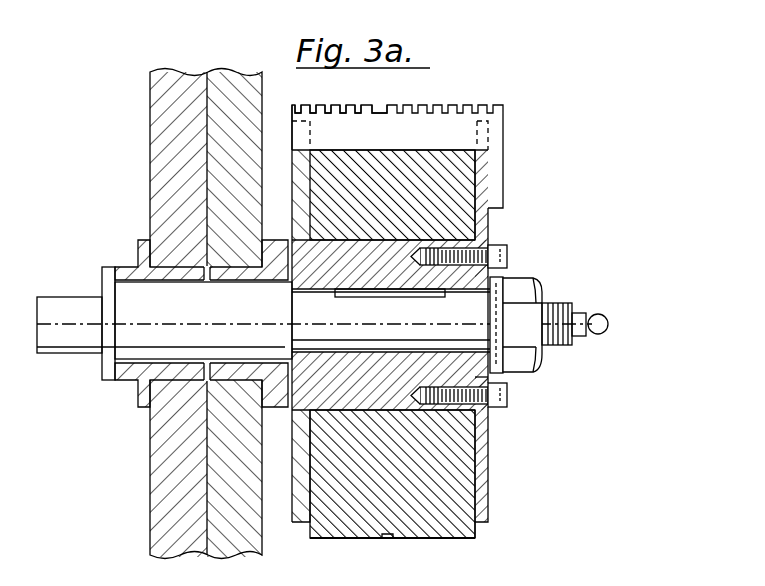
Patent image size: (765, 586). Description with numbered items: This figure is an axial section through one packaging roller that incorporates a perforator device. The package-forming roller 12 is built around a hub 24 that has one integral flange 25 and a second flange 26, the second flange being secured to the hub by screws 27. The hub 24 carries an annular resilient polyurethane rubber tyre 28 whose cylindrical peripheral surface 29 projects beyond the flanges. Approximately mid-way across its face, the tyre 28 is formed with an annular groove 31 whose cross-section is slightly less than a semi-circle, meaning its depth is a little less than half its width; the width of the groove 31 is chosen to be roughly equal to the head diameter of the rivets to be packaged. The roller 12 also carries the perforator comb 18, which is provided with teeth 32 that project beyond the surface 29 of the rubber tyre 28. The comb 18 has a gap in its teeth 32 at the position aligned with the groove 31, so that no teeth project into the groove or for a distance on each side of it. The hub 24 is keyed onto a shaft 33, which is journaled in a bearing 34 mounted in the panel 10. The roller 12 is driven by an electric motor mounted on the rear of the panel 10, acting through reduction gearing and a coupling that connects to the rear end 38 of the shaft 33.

The panel 10 is at (205, 452).
The package-forming roller 12 is at (453, 207).
The perforator comb 18 is at (442, 132).
The hub 24 is at (448, 367).
The integral flange 25 is at (303, 513).
The second flange 26 is at (488, 453).
The screws 27 is at (508, 245).
The annular resilient polyurethane rubber tyre 28 is at (457, 528).
The cylindrical peripheral surface 29 is at (349, 531).
The annular groove 31 is at (382, 110).
The teeth 32 is at (322, 108).
The shaft 33 is at (476, 313).
The bearing 34 is at (140, 260).
The rear end of the shaft 38 is at (61, 298).